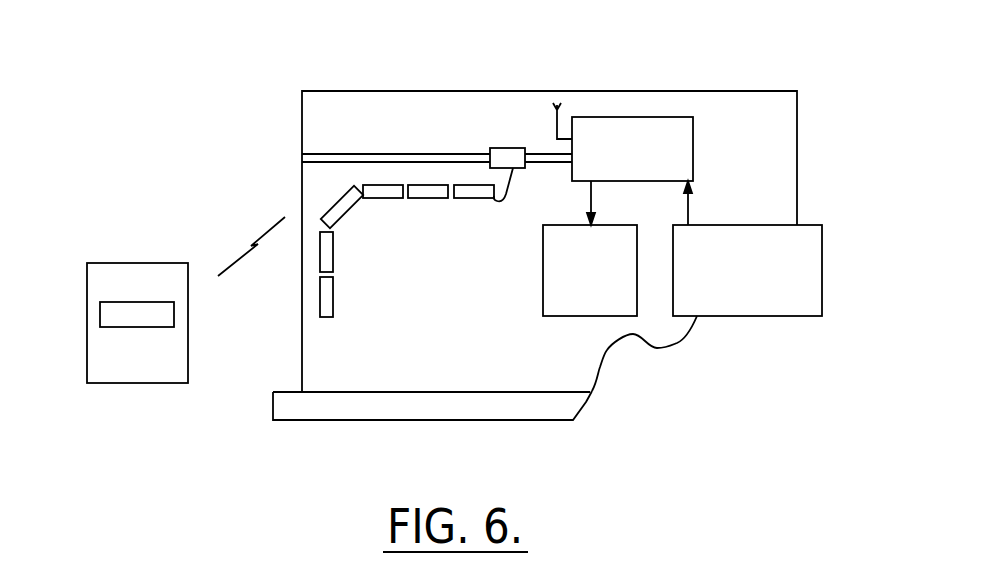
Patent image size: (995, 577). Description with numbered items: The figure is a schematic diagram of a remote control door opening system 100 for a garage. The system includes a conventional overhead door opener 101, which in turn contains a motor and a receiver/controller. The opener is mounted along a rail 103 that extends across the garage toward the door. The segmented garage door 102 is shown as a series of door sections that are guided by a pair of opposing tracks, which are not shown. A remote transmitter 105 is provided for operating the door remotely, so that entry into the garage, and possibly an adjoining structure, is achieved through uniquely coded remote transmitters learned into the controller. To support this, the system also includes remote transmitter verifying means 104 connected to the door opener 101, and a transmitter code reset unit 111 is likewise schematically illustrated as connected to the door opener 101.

The door opening system 100 is at (313, 78).
The overhead door opener 101 is at (694, 138).
The segmented garage door 102 is at (390, 211).
The rail 103 is at (363, 154).
The remote transmitter verifying means 104 is at (572, 317).
The remote transmitter 105 is at (188, 363).
The transmitter code reset unit 111 is at (822, 292).